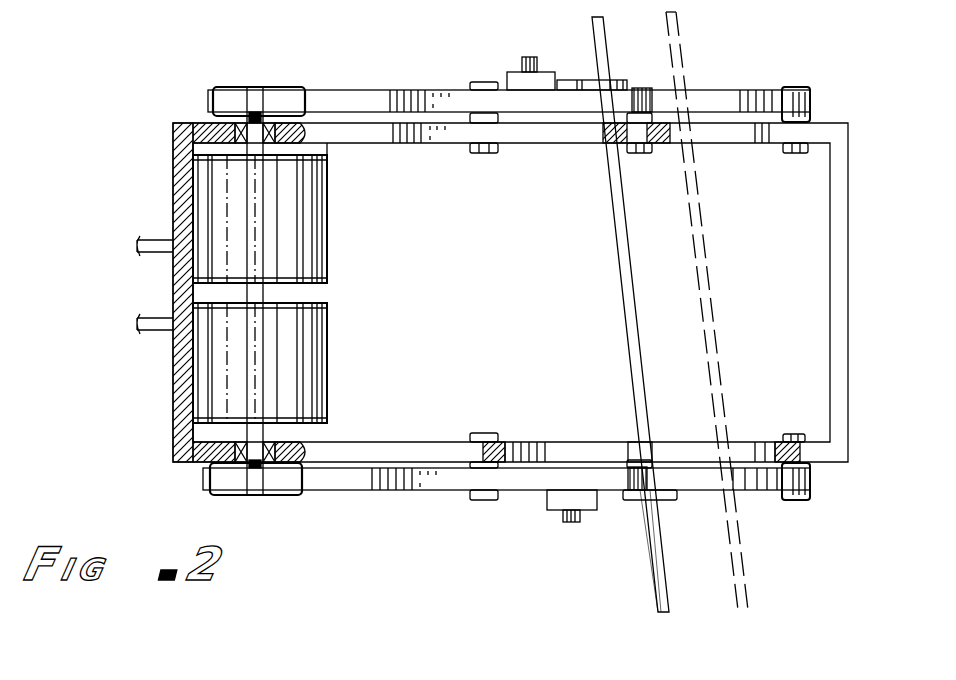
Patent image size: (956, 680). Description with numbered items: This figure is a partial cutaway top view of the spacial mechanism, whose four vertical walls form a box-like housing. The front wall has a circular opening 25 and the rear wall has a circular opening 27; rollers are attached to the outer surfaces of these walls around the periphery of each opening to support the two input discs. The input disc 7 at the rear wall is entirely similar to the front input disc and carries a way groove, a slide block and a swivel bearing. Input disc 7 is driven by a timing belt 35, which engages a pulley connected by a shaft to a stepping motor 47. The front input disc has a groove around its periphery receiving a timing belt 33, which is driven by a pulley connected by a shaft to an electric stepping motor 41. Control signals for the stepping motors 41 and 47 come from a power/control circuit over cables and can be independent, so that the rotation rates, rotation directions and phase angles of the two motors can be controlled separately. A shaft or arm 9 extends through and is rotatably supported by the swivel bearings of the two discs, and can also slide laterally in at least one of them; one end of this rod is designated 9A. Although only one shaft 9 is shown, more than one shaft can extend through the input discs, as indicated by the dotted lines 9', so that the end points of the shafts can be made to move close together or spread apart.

The input disc 7 is at (738, 84).
The timing belt 35 is at (355, 102).
The timing belt 33 is at (356, 478).
The stepping motor 47 is at (330, 250).
The stepping motor 41 is at (330, 350).
The circular opening 27 is at (768, 128).
The circular opening 25 is at (768, 442).
The shaft 9 is at (630, 314).
The dotted lines 9' is at (712, 311).
The end of rod 9A is at (652, 566).